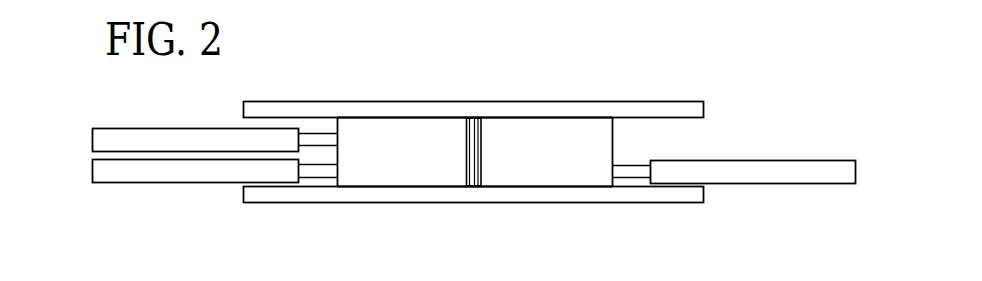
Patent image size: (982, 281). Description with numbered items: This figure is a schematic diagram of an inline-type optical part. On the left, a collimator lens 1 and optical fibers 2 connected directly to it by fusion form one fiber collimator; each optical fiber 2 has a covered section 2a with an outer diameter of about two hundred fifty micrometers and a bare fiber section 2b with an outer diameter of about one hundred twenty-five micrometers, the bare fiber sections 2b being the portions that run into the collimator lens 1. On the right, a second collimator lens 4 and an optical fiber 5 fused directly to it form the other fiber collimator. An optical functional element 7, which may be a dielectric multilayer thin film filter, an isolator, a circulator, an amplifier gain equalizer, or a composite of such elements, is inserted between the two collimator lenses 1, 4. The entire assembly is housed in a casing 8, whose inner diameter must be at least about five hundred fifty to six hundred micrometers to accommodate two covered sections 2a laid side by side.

The collimator lens 1 is at (403, 172).
The optical fibers 2 is at (196, 167).
The covered section 2a is at (230, 173).
The bare fiber section 2b is at (317, 172).
The collimator lens 4 is at (538, 173).
The optical fiber 5 is at (728, 160).
The optical functional element 7 is at (472, 174).
The casing 8 is at (412, 102).